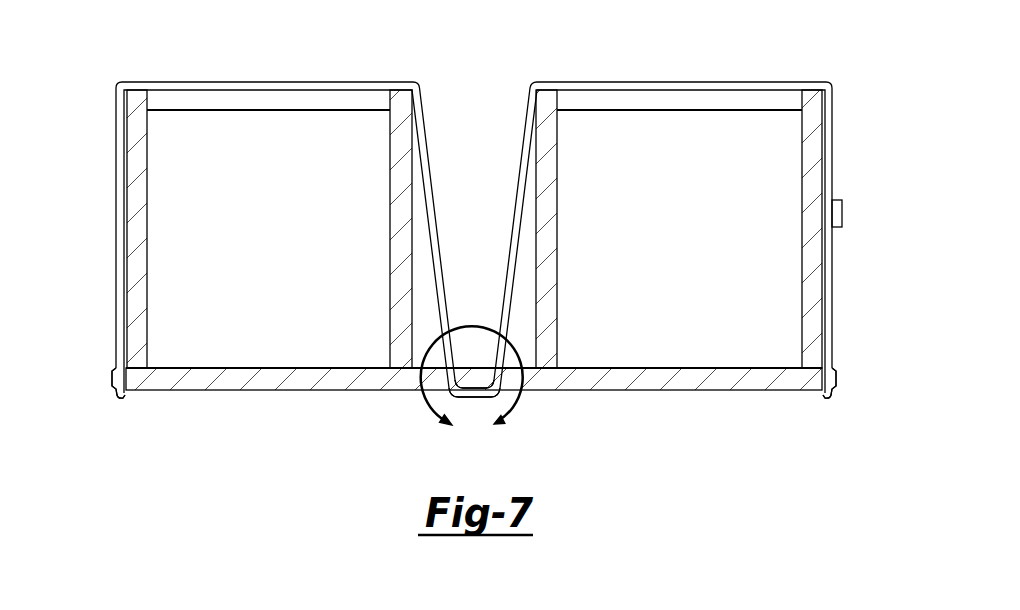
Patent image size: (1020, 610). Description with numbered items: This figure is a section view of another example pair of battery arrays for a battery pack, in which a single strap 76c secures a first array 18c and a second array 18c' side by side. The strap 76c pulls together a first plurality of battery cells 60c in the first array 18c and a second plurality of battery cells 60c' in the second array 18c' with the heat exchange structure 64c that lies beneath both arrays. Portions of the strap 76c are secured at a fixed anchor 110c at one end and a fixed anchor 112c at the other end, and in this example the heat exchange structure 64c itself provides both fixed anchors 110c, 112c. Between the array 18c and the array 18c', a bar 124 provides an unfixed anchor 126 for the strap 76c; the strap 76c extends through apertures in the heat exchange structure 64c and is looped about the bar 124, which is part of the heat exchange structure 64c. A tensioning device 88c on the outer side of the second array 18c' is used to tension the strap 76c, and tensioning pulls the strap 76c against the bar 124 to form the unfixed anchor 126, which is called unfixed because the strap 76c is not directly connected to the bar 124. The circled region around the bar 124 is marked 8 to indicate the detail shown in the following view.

The first array 18c is at (299, 207).
The second array 18c' is at (687, 207).
The strap 76c is at (680, 82).
The tensioning device 88c is at (842, 213).
The first plurality of battery cells 60c is at (268, 239).
The second plurality of battery cells 60c' is at (679, 239).
The bar 124 is at (475, 367).
The detail view circle 8 is at (472, 388).
The unfixed anchor 126 is at (416, 435).
The heat exchange structure 64c is at (678, 390).
The fixed anchor 110c is at (78, 384).
The fixed anchor 112c is at (868, 385).